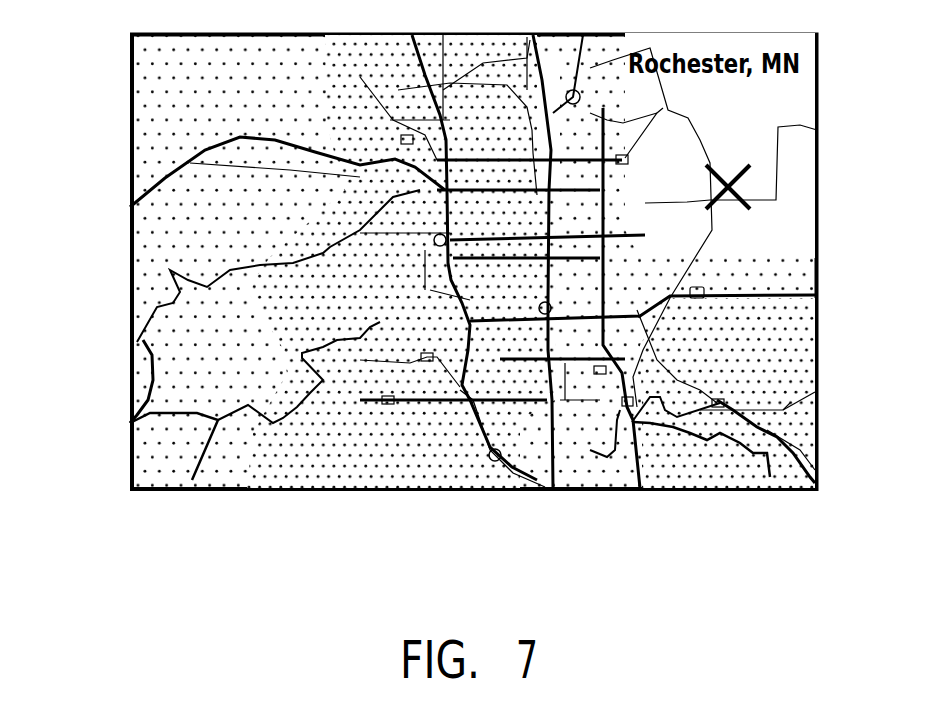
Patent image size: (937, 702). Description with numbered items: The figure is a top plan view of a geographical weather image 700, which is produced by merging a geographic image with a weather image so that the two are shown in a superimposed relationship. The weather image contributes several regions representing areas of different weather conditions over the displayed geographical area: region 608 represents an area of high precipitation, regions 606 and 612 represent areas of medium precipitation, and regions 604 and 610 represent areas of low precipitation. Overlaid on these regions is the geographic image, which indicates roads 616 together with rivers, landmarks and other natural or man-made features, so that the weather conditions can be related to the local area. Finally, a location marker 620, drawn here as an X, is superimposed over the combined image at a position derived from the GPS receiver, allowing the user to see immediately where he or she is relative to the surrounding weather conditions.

The geographical weather image 700 is at (126, 223).
The region 604 is at (173, 462).
The region 606 is at (296, 462).
The region 608 is at (433, 462).
The region 610 is at (780, 270).
The region 612 is at (780, 371).
The roads 616 is at (148, 414).
The location marker 620 is at (737, 183).